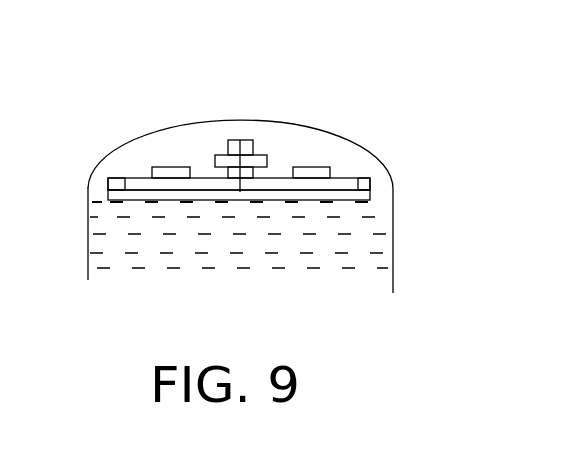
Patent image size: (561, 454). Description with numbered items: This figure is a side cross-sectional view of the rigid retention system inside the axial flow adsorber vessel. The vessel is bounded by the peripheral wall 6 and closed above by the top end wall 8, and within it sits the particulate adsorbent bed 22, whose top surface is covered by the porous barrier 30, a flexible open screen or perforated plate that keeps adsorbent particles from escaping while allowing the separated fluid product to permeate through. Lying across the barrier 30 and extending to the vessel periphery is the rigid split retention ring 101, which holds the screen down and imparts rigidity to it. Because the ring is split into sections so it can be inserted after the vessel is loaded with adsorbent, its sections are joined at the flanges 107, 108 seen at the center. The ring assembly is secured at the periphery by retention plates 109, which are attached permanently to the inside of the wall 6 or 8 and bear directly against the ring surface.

The peripheral wall 6 is at (88, 238).
The top end wall 8 is at (107, 160).
The particulate adsorbent bed 22 is at (385, 260).
The porous barrier 30 is at (355, 199).
The rigid split retention ring 101 is at (110, 183).
The flange 107 is at (253, 140).
The flange 108 is at (228, 140).
The retention plate 109 is at (168, 167).